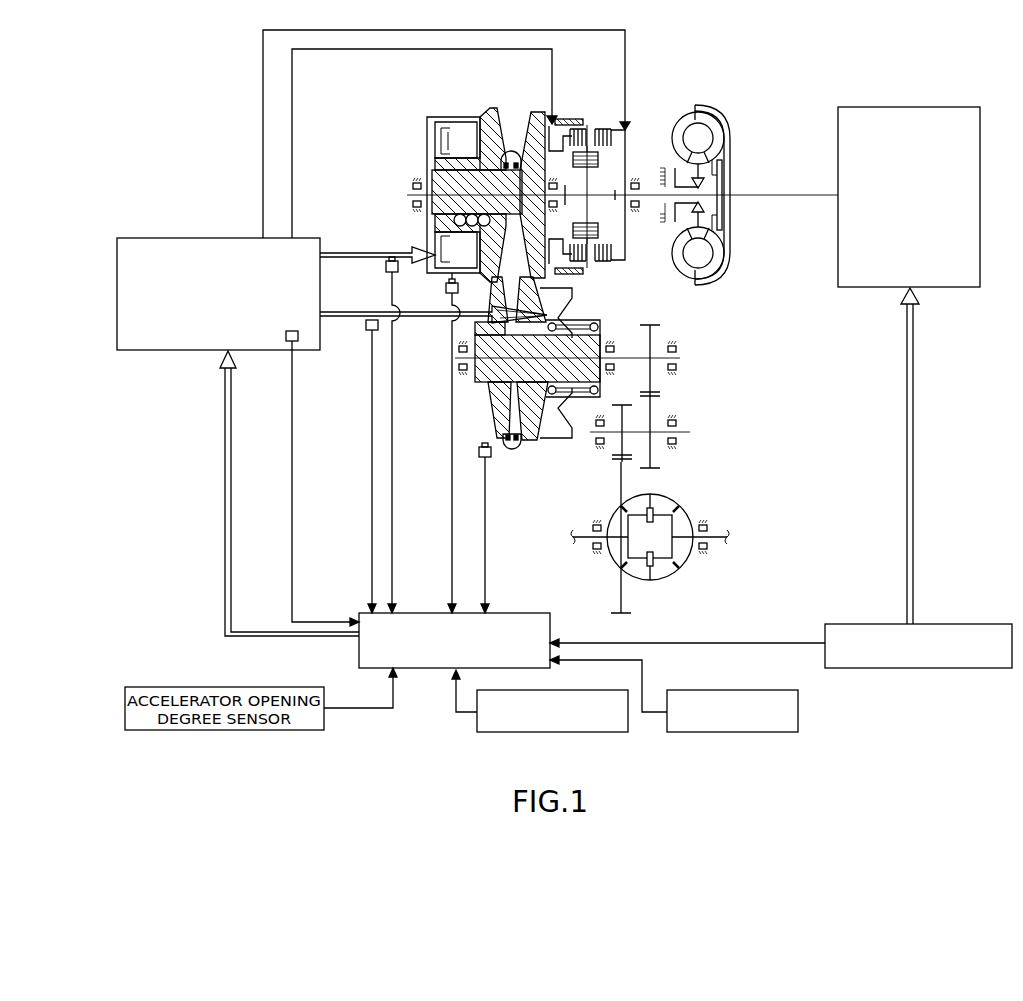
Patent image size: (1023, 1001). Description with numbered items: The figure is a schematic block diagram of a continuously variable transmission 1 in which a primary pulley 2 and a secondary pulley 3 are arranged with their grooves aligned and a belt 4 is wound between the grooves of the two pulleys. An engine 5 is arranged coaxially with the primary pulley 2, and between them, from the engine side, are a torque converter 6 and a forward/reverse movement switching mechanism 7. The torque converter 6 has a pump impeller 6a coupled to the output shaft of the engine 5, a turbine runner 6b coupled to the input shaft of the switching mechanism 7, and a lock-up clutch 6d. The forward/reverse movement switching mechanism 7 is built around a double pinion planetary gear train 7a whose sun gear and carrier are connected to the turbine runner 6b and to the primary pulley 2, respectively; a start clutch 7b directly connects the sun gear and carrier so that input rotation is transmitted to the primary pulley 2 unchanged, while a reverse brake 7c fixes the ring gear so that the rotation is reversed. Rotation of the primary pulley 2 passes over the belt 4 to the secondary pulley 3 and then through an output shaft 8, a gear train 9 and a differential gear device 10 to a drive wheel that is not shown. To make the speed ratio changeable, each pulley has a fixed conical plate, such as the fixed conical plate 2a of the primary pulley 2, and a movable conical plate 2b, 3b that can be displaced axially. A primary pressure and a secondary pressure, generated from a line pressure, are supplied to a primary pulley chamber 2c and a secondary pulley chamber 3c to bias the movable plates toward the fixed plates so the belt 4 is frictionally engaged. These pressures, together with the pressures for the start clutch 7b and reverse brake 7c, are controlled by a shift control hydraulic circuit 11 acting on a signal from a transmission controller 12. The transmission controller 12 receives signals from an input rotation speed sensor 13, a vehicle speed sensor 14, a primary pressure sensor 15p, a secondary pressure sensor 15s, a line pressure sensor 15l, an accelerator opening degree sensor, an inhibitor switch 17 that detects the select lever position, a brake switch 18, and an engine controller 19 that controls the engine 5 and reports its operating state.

The continuously variable transmission 1 is at (437, 110).
The primary pulley 2 is at (468, 167).
The fixed conical plate 2a is at (535, 112).
The movable conical plate 2b is at (489, 108).
The primary pulley chamber 2c is at (448, 140).
The secondary pulley 3 is at (567, 391).
The movable conical plate 3b is at (522, 444).
The secondary pulley chamber 3c is at (541, 443).
The belt 4 is at (512, 152).
The engine 5 is at (911, 107).
The torque converter 6 is at (709, 154).
The pump impeller 6a is at (668, 130).
The turbine runner 6b is at (724, 255).
The lock-up clutch 6d is at (732, 172).
The forward/reverse movement switching mechanism 7 is at (594, 153).
The double pinion planetary gear train 7a is at (599, 131).
The start clutch 7b is at (607, 131).
The reverse brake 7c is at (591, 136).
The output shaft 8 is at (640, 357).
The gear train 9 is at (697, 388).
The differential gear device 10 is at (692, 496).
The shift control hydraulic circuit 11 is at (208, 238).
The transmission controller 12 is at (357, 650).
The input rotation speed sensor 13 is at (446, 289).
The vehicle speed sensor 14 is at (488, 458).
The primary pressure sensor 15p is at (388, 272).
The secondary pressure sensor 15s is at (368, 330).
The line pressure sensor 15l is at (289, 341).
The inhibitor switch 17 is at (565, 690).
The brake switch 18 is at (798, 712).
The engine controller 19 is at (945, 624).